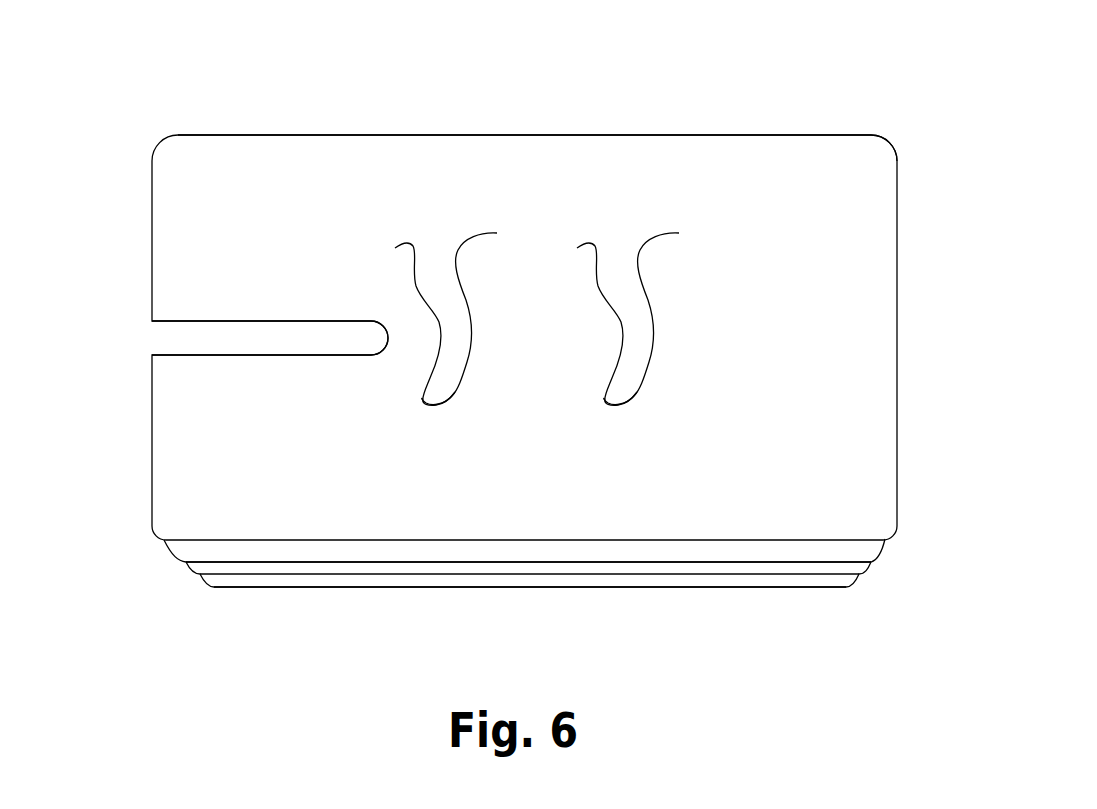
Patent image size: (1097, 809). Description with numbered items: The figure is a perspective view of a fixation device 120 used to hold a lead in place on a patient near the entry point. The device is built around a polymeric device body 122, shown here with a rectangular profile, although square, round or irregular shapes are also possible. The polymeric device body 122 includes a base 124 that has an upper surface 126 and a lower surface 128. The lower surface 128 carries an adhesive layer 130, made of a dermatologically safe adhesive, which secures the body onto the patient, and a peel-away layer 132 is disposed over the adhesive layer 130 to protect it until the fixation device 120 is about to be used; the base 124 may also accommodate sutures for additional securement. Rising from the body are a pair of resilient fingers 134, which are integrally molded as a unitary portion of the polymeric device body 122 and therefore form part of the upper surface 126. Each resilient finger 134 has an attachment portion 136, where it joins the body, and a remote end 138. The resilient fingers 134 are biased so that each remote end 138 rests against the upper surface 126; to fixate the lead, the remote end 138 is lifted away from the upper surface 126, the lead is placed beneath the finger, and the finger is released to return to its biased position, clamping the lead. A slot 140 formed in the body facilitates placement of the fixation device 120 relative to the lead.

The fixation device 120 is at (296, 56).
The polymeric device body 122 is at (158, 149).
The base 124 is at (793, 98).
The upper surface 126 is at (830, 237).
The lower surface 128 is at (823, 604).
The adhesive layer 130 is at (228, 568).
The peel-away layer 132 is at (340, 580).
The resilient finger 134 is at (455, 339).
The attachment portion 136 is at (434, 250).
The remote end 138 is at (426, 403).
The slot 140 is at (172, 321).